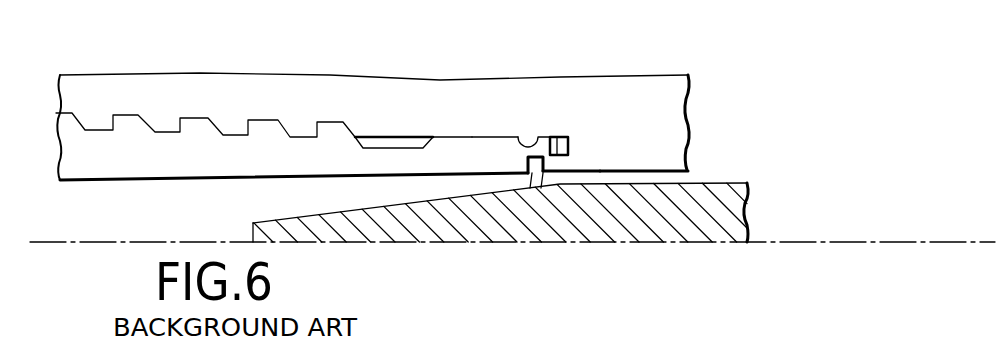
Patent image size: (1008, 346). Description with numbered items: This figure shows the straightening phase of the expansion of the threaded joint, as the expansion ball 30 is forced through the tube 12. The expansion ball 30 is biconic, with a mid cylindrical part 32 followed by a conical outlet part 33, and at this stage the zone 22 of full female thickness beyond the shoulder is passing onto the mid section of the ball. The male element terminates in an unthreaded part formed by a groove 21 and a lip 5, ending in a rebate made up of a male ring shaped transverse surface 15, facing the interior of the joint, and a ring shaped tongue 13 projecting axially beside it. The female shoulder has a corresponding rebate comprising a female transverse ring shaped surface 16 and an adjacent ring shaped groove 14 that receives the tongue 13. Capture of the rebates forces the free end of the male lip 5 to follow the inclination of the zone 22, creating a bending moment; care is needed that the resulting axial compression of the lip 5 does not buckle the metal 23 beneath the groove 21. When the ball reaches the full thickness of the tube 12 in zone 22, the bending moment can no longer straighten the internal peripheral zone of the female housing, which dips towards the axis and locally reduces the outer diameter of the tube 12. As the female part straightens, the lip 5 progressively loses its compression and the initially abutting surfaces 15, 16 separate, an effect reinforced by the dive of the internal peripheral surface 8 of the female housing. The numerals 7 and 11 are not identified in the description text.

The male lip 5 is at (490, 148).
The sliding surface 7 is at (455, 137).
The internal peripheral surface of the female housing 8 is at (538, 135).
The lower surface 11 is at (107, 160).
The tube 12 is at (658, 95).
The ring shaped tongue 13 is at (560, 138).
The ring shaped groove 14 is at (570, 160).
The male ring shaped transverse surface 15 is at (534, 190).
The female transverse ring shaped surface 16 is at (548, 176).
The groove 21 is at (387, 145).
The full thickness zone of the female element 22 is at (638, 153).
The metal beneath the groove 23 is at (167, 148).
The expansion ball 30 is at (608, 228).
The mid cylindrical part 32 is at (712, 182).
The conical outlet part 33 is at (357, 207).